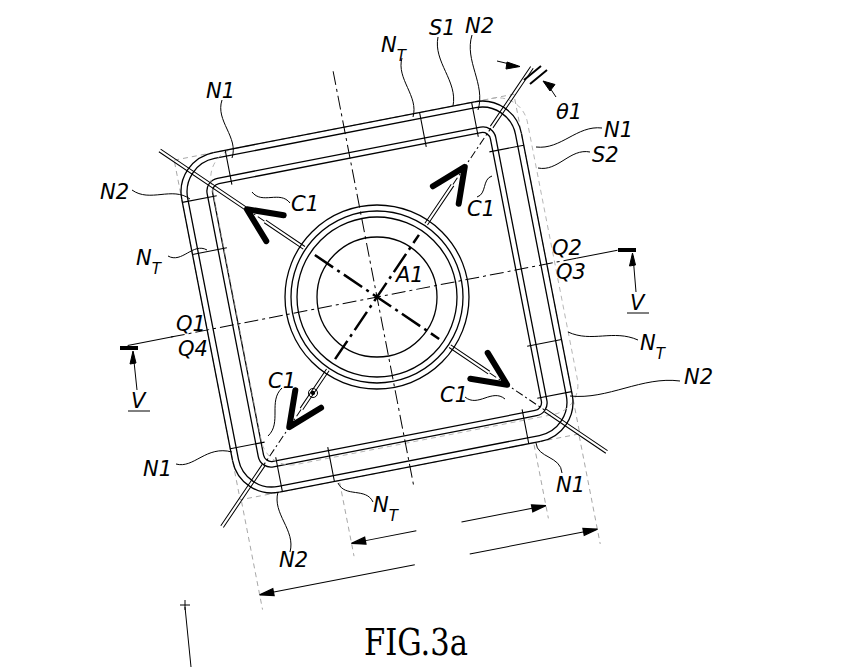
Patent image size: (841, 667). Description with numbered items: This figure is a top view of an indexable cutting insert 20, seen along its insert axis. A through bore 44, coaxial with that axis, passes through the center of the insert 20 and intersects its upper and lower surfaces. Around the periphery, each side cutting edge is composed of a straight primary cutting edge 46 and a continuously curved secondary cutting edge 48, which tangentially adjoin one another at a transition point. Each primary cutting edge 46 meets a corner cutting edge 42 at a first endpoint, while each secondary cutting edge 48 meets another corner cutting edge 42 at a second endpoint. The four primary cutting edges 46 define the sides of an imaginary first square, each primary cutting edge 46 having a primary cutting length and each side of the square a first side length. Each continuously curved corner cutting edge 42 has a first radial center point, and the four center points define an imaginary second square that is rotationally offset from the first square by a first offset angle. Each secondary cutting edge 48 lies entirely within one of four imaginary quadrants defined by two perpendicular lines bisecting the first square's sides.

The indexable cutting insert 20 is at (586, 188).
The corner cutting edge 42 is at (196, 162).
The through bore 44 is at (414, 346).
The primary cutting edge 46 is at (292, 136).
The secondary cutting edge 48 is at (458, 108).